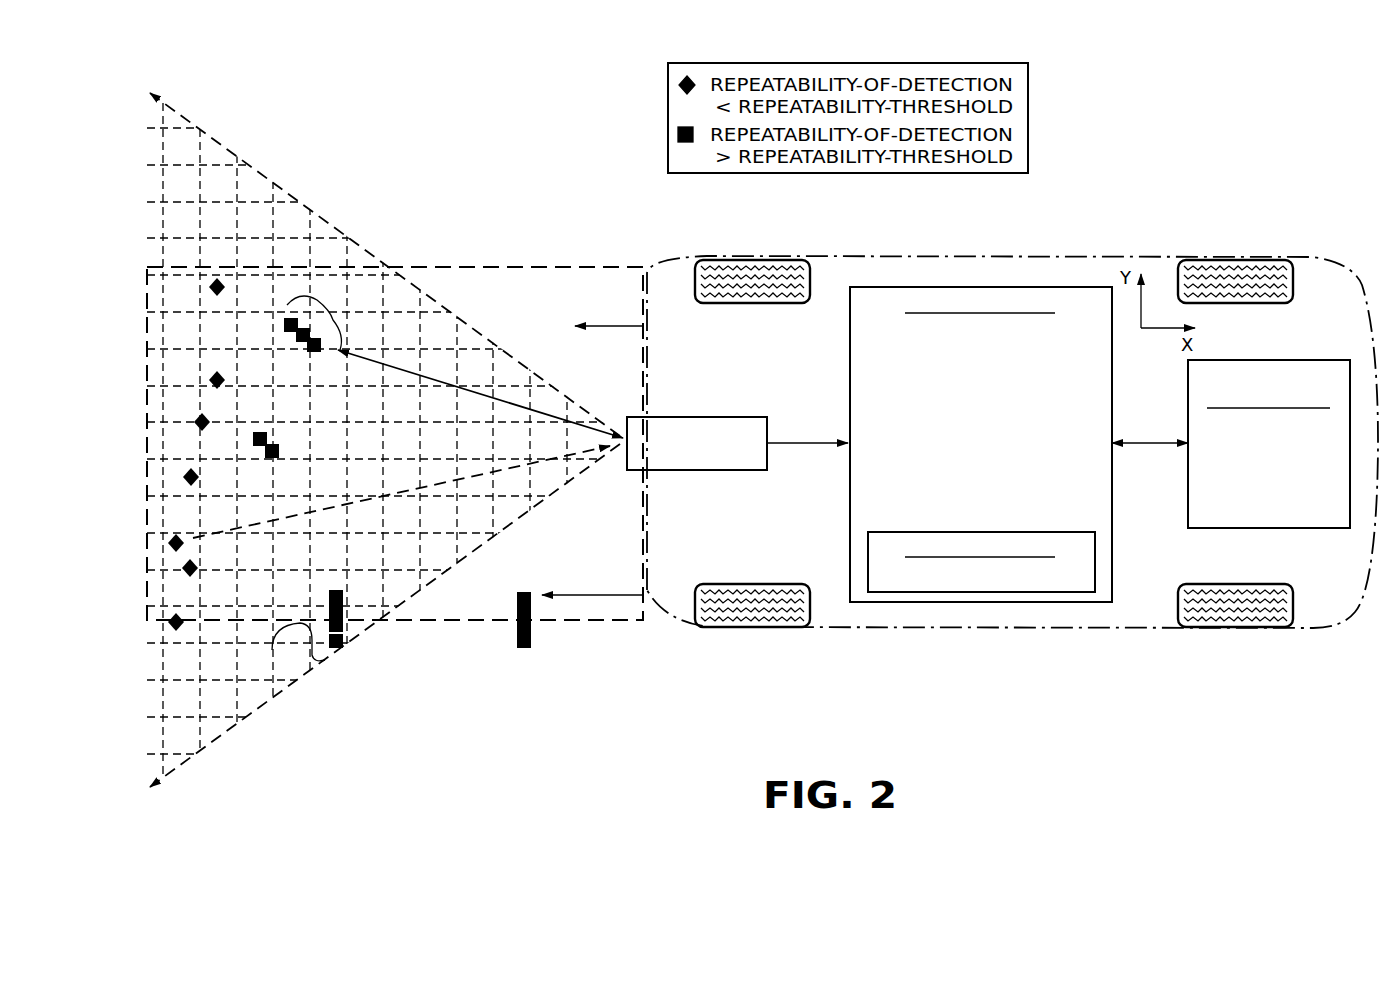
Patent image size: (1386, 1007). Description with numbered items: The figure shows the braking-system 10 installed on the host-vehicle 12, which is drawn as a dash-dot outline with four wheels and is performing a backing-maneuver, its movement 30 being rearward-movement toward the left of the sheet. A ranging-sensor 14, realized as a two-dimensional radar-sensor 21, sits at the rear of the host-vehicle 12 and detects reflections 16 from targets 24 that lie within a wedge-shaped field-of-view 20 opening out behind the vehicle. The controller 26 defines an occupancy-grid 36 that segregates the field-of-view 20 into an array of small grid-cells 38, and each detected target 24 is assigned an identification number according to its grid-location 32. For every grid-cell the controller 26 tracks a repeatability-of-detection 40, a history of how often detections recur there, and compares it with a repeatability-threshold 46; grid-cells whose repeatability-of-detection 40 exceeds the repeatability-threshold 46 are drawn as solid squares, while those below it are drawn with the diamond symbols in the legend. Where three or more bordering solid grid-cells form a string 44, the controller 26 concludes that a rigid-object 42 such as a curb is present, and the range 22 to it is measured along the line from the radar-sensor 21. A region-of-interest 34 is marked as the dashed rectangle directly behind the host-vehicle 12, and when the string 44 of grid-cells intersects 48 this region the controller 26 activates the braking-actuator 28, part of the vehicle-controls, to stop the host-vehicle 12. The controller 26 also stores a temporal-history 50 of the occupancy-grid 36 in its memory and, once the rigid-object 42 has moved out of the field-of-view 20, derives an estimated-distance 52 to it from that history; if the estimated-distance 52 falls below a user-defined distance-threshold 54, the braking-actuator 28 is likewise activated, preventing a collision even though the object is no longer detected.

The braking-system 10 is at (1284, 210).
The host-vehicle 12 is at (1120, 632).
The ranging-sensor 14 is at (682, 417).
The reflections 16 is at (523, 463).
The field-of-view 20 is at (467, 557).
The radar-sensor 21 is at (715, 470).
The range 22 is at (477, 397).
The target 24 is at (258, 432).
The controller 26 is at (1037, 297).
The braking-actuator 28 is at (1215, 485).
The movement 30 is at (597, 325).
The grid-location 32 is at (898, 360).
The region-of-interest 34 is at (540, 283).
The occupancy-grid 36 is at (228, 697).
The grid-cells 38 is at (183, 728).
The repeatability-of-detection 40 is at (903, 387).
The rigid-object 42 is at (280, 317).
The string 44 is at (330, 307).
The repeatability-threshold 46 is at (903, 440).
The intersects 48 is at (347, 622).
The temporal-history 50 is at (873, 585).
The estimated-distance 52 is at (595, 595).
The distance-threshold 54 is at (862, 512).